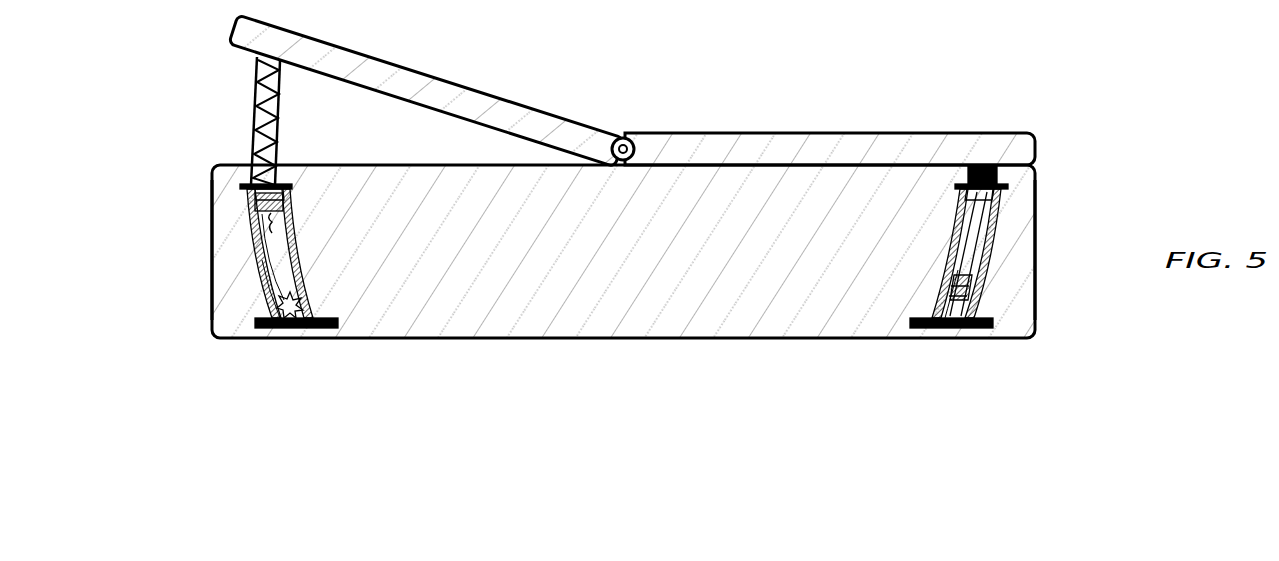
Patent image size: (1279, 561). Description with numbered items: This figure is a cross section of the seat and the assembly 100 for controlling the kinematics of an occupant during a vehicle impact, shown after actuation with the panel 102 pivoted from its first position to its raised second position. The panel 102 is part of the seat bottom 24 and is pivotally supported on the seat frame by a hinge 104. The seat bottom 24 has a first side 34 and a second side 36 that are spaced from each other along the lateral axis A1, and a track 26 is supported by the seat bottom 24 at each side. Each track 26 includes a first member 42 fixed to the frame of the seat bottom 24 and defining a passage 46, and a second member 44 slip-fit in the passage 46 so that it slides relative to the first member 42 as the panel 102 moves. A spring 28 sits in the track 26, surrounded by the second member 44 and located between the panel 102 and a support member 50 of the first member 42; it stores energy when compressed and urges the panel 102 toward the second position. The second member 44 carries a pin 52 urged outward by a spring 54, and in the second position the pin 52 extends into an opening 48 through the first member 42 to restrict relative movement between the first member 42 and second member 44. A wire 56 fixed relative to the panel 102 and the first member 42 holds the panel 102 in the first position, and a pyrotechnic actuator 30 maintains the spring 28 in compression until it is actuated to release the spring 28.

The assembly 100 is at (113, 143).
The panel 102 is at (400, 50).
The hinge 104 is at (625, 138).
The seat bottom 24 is at (585, 305).
The track 26 is at (260, 66).
The spring 28 is at (278, 95).
The pyrotechnic actuator 30 is at (295, 322).
The first side 34 is at (212, 203).
The second side 36 is at (1035, 207).
The first member 42 is at (255, 264).
The second member 44 is at (250, 100).
The passage 46 is at (262, 292).
The opening 48 is at (286, 205).
The support member 50 is at (248, 186).
The pin 52 is at (246, 200).
The spring 54 is at (253, 228).
The wire 56 is at (270, 220).
The lateral axis A1 is at (725, 408).